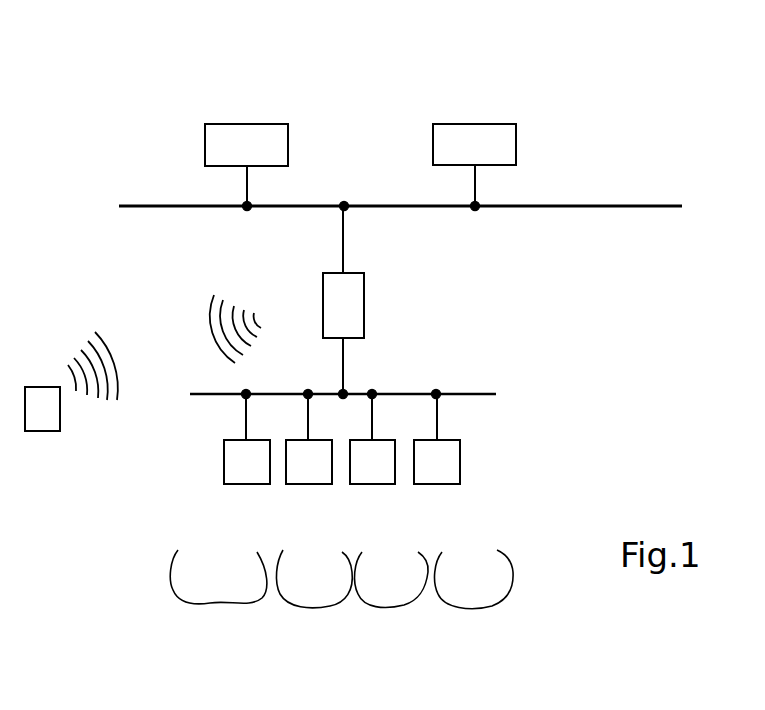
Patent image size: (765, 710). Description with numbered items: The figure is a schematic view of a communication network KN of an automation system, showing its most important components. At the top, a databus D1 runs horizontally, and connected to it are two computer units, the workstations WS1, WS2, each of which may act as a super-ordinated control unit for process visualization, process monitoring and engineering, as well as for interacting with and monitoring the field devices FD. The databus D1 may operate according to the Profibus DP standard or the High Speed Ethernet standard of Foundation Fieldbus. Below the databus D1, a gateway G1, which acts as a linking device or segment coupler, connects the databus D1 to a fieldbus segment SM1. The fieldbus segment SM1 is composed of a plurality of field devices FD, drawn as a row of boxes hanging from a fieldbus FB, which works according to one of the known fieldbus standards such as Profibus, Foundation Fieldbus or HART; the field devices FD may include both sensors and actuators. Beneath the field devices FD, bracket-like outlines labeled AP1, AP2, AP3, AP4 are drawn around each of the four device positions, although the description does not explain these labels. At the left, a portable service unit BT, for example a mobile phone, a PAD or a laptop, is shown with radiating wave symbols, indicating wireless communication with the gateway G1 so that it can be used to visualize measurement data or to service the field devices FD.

The communication network KN is at (586, 64).
The databus D1 is at (620, 205).
The computer unit (workstation) WS1 is at (248, 135).
The computer unit (workstation) WS2 is at (474, 135).
The fieldbus segment SM1 is at (462, 288).
The gateway G1 is at (330, 315).
The fieldbus FB is at (485, 393).
The field device FD is at (246, 475).
The application / process part 1 AP1 is at (218, 577).
The application / process part 2 AP2 is at (314, 579).
The application / process part 3 AP3 is at (392, 579).
The application / process part 4 AP4 is at (474, 579).
The portable service unit BT is at (43, 420).